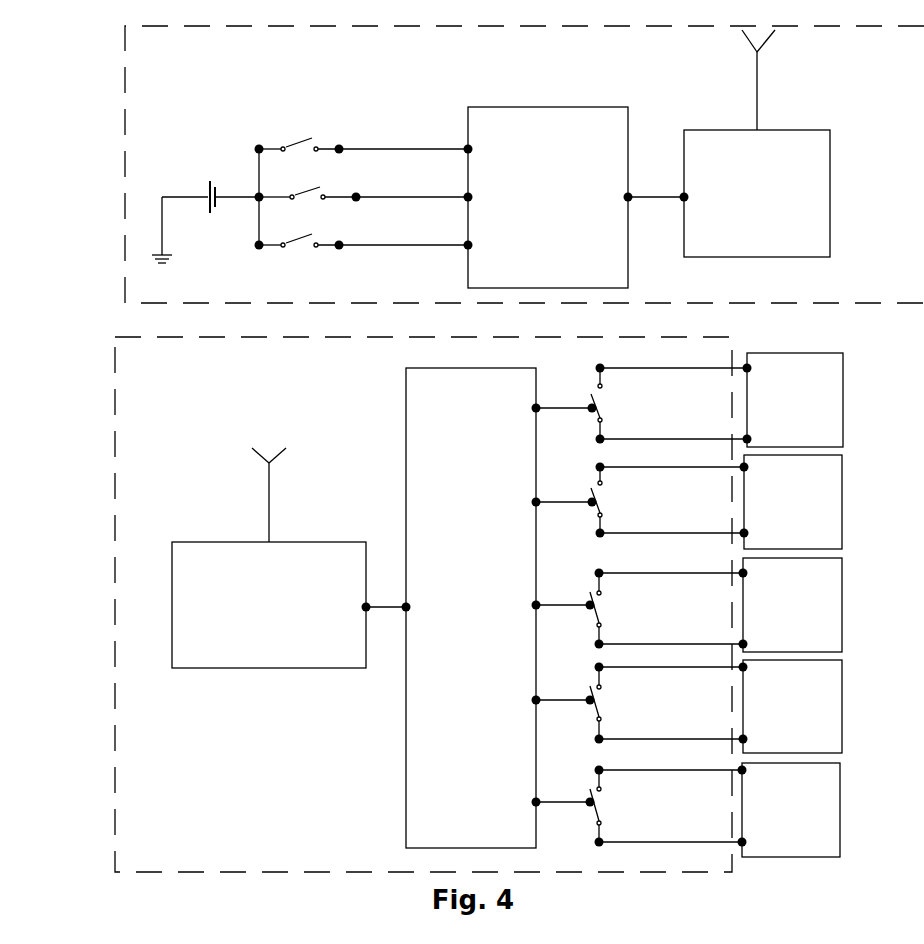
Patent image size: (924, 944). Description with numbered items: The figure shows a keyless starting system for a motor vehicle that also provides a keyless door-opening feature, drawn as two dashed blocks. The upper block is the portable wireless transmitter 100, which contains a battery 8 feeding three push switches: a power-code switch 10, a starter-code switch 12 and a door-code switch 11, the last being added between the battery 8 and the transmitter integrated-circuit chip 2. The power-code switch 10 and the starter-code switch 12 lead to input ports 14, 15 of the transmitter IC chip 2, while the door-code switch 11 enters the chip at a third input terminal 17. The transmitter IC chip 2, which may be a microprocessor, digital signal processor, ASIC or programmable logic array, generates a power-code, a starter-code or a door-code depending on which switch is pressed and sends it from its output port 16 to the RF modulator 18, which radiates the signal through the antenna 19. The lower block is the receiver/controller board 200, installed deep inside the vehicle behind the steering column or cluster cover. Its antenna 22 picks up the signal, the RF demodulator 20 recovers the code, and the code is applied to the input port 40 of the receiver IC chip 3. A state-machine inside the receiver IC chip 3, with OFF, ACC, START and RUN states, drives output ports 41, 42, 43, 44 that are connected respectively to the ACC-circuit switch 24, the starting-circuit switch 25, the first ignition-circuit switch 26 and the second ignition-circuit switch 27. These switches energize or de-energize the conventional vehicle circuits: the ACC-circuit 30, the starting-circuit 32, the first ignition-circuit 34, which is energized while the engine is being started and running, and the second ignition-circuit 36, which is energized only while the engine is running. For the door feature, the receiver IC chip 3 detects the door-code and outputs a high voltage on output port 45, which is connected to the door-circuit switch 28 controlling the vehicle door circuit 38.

The portable wireless transmitter 100 is at (92, 189).
The transmitter integrated-circuit chip 2 is at (479, 90).
The battery 8 is at (210, 180).
The power-code switch 10 is at (303, 249).
The door-code switch 11 is at (310, 200).
The starter-code switch 12 is at (296, 137).
The input port 14 is at (457, 257).
The input port 15 is at (464, 147).
The input terminal 17 is at (460, 187).
The output port 16 is at (636, 185).
The RF modulator 18 is at (683, 254).
The antenna 19 is at (749, 53).
The receiver/controller board 200 is at (87, 785).
The receiver integrated-circuit chip 3 is at (379, 774).
The RF demodulator 20 is at (196, 542).
The antenna 22 is at (277, 440).
The input port 40 is at (398, 596).
The output port 41 is at (546, 403).
The output port 42 is at (546, 497).
The output port 43 is at (546, 600).
The output port 44 is at (543, 695).
The output port 45 is at (543, 786).
The ACC-circuit switch 24 is at (608, 415).
The starting-circuit switch 25 is at (607, 508).
The first ignition-circuit switch 26 is at (607, 615).
The second ignition-circuit switch 27 is at (607, 710).
The door-circuit switch 28 is at (607, 813).
The ACC-circuit 30 is at (846, 408).
The starting-circuit 32 is at (843, 503).
The first ignition-circuit 34 is at (843, 607).
The second ignition-circuit 36 is at (843, 700).
The vehicle door circuit 38 is at (843, 803).